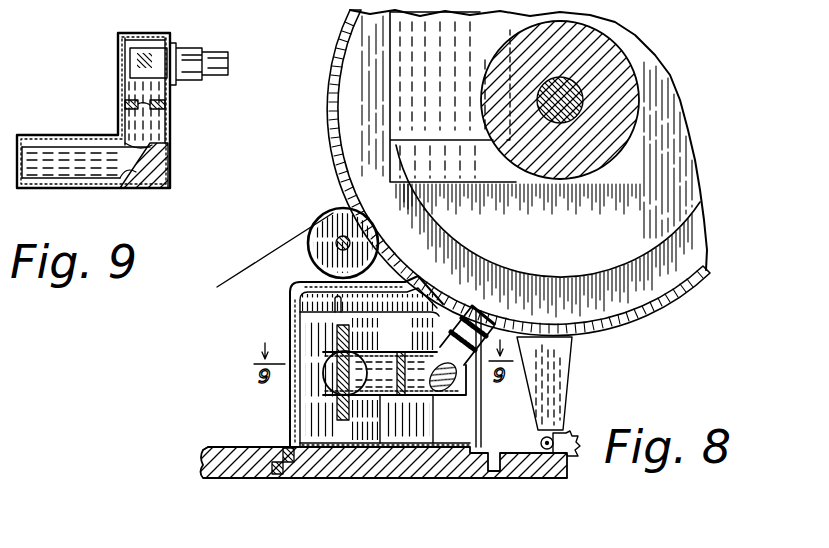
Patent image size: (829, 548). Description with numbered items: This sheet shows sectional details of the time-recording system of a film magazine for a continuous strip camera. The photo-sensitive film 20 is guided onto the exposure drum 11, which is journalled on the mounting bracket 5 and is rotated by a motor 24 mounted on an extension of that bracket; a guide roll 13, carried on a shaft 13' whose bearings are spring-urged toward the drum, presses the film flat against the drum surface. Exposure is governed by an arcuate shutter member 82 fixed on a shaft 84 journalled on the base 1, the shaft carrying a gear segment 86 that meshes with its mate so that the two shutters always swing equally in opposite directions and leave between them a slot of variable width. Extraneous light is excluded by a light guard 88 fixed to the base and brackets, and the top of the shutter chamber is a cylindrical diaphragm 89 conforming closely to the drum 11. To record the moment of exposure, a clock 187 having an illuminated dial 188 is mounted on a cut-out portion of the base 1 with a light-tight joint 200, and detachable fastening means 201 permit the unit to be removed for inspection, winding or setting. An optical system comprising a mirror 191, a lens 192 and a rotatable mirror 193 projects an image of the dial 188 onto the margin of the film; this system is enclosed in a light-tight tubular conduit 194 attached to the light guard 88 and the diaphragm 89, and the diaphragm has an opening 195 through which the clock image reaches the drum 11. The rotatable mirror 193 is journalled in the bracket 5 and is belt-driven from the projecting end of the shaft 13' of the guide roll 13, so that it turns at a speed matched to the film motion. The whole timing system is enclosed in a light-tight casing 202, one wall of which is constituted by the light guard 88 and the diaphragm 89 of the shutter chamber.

In FIG. 8, the base 1 is at (230, 470).
In FIG. 8, the mounting bracket 5 is at (604, 42).
In FIG. 8, the exposure drum 11 is at (640, 295).
In FIG. 8, the guide roll 13 is at (337, 229).
In FIG. 8, the shaft 13' is at (308, 255).
In FIG. 8, the photo-sensitive film 20 is at (268, 255).
In FIG. 8, the motor 24 is at (416, 112).
In FIG. 8, the arcuate shutter member 82 is at (560, 365).
In FIG. 8, the shaft 84 is at (544, 438).
In FIG. 8, the gear segment 86 is at (570, 457).
In FIG. 8, the light guard 88 is at (481, 386).
In FIG. 8, the cylindrical diaphragm 89 is at (508, 322).
In FIG. 8, the clock 187 is at (421, 426).
In FIG. 8, the dial 188 is at (338, 335).
In FIG. 8, the lens 192 is at (400, 354).
In FIG. 9, the lens 192 is at (170, 116).
In FIG. 8, the rotatable mirror 193 is at (443, 395).
In FIG. 9, the rotatable mirror 193 is at (156, 71).
In FIG. 9, the tubular conduit 194 is at (118, 88).
In FIG. 9, the mirror 191 is at (124, 176).
In FIG. 8, the opening 195 is at (478, 309).
In FIG. 8, the light-tight joint 200 is at (343, 467).
In FIG. 8, the detachable fastening means 201 is at (289, 479).
In FIG. 8, the light-tight casing 202 is at (290, 335).